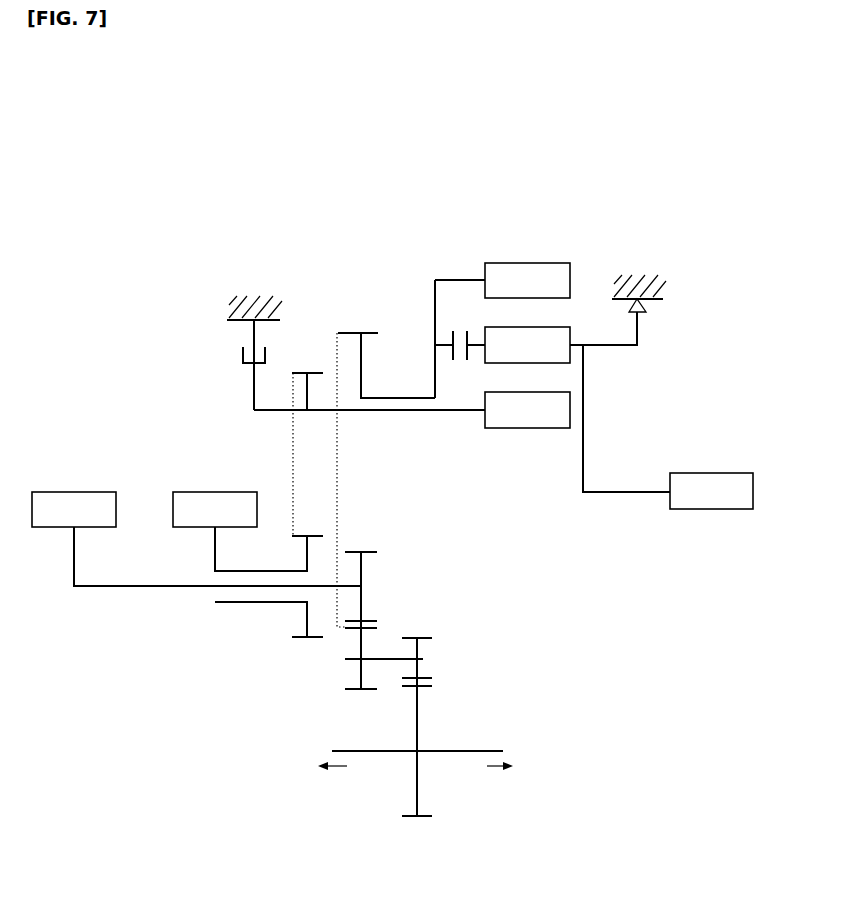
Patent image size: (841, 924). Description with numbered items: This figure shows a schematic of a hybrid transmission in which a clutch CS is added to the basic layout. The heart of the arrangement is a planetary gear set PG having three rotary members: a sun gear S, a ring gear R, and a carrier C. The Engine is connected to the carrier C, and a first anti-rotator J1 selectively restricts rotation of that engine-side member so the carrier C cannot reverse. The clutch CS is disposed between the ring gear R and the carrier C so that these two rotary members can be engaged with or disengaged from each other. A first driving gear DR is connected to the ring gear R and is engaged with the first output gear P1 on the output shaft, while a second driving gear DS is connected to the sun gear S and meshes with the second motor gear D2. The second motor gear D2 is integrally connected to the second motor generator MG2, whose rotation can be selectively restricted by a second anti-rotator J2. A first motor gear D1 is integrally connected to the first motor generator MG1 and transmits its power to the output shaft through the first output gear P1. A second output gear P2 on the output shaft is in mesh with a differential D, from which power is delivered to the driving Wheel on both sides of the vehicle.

The planetary gear set PG is at (527, 296).
The ring gear R is at (527, 280).
The carrier C is at (527, 345).
The sun gear S is at (527, 410).
The clutch CS is at (443, 343).
The first driving gear DR is at (361, 331).
The second driving gear DS is at (308, 371).
The first anti-rotator J1 is at (648, 307).
The second anti-rotator J2 is at (243, 353).
The engine Engine is at (711, 491).
The first motor generator MG1 is at (196, 539).
The second motor generator MG2 is at (248, 531).
The first motor gear D1 is at (371, 549).
The second motor gear D2 is at (296, 640).
The first output gear P1 is at (352, 690).
The second output gear P2 is at (424, 636).
The differential D is at (415, 817).
The driving wheels Wheel is at (415, 767).